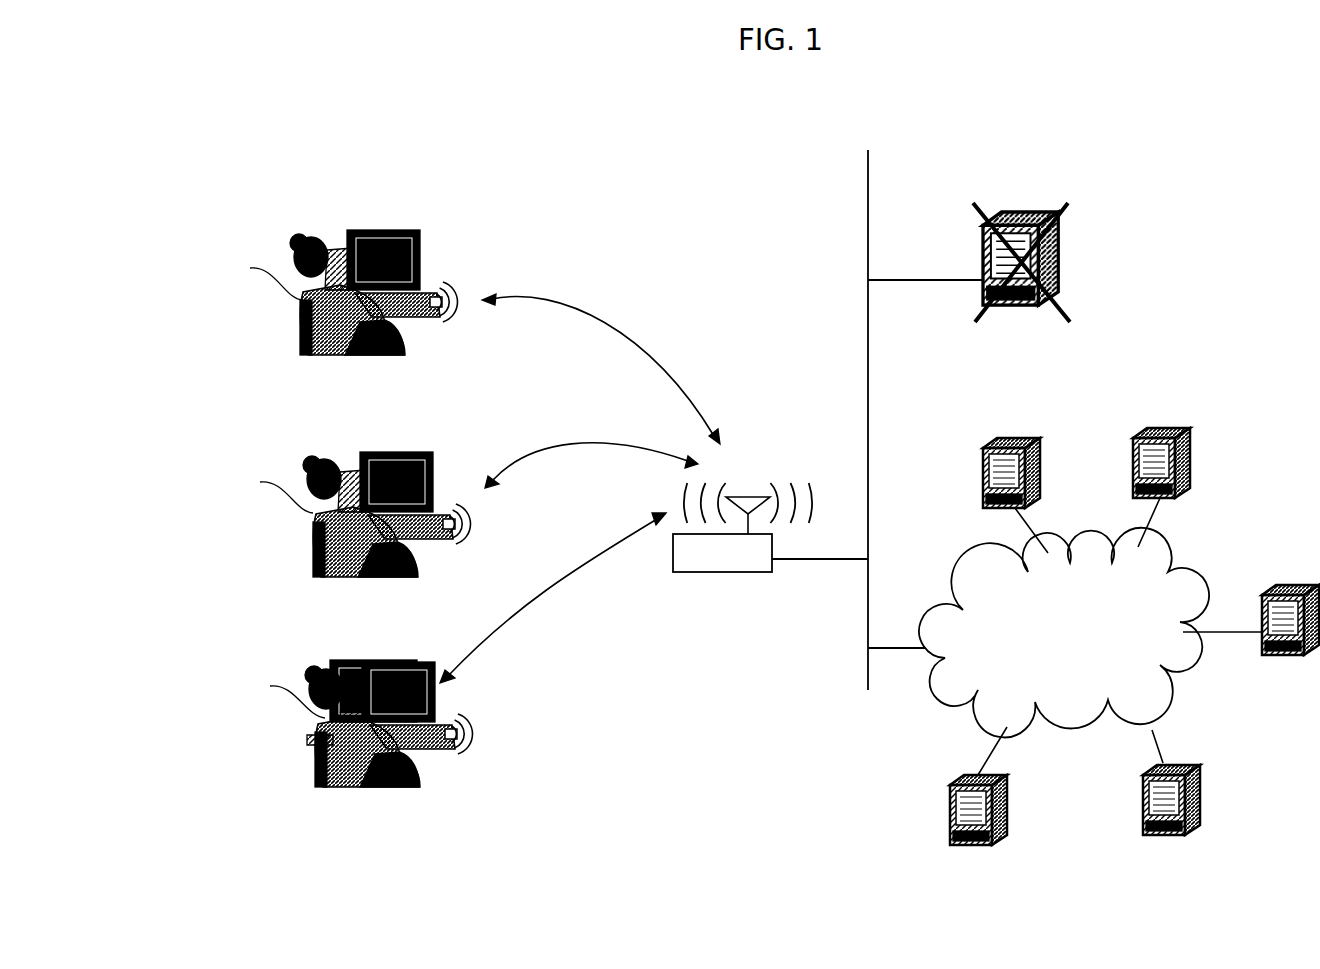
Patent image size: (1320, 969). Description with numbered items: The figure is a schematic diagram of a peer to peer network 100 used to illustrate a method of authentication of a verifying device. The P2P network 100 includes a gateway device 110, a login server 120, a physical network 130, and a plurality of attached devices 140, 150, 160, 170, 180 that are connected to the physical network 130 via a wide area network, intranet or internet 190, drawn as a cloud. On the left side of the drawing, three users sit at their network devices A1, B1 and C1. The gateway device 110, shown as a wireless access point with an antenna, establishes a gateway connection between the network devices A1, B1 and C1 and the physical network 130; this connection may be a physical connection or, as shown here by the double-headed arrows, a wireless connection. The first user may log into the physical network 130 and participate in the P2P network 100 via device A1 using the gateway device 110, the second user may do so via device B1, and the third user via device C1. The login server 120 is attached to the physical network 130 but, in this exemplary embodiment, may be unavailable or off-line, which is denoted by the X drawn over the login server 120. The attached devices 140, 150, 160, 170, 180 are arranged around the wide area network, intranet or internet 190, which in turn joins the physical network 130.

The peer to peer (P2P) network 100 is at (680, 195).
The gateway device 110 is at (722, 574).
The login server 120 is at (983, 272).
The physical network 130 is at (866, 603).
The attached device 140 is at (983, 478).
The attached device 150 is at (1133, 465).
The attached device 160 is at (1262, 623).
The attached device 170 is at (1143, 802).
The attached device 180 is at (950, 813).
The wide area network, intranet or internet 190 is at (953, 688).
The network device A1 is at (385, 229).
The network device B1 is at (392, 452).
The network device C1 is at (372, 662).